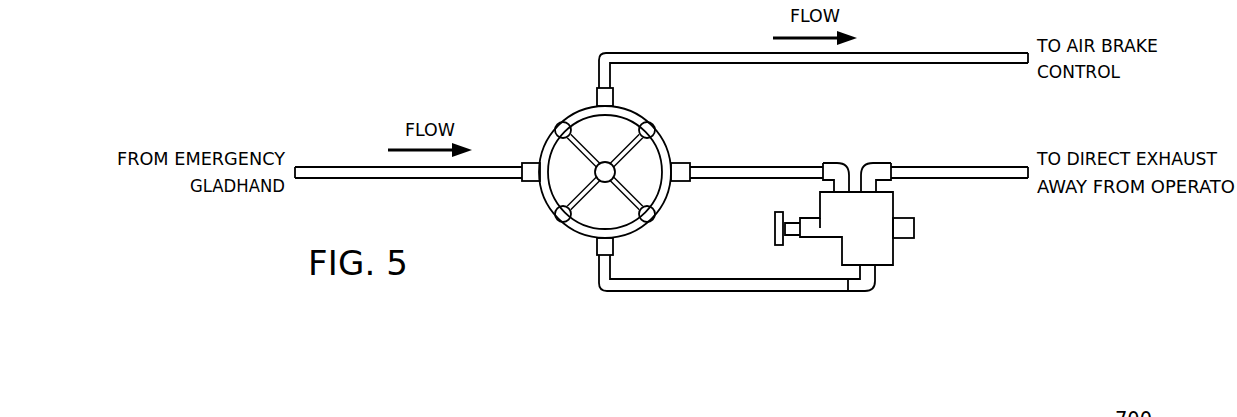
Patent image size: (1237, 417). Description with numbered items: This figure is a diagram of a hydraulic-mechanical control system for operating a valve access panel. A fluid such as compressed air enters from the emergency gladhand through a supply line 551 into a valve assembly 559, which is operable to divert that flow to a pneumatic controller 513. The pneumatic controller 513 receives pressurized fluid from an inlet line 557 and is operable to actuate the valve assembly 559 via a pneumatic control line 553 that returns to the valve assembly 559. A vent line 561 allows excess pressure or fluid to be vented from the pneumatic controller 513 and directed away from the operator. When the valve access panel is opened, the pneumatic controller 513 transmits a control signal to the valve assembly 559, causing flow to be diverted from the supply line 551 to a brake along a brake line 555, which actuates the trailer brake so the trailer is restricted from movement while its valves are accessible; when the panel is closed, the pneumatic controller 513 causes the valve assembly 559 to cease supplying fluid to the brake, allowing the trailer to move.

The pneumatic controller 513 is at (895, 252).
The supply line 551 is at (358, 166).
The pneumatic control line 553 is at (728, 293).
The brake line 555 is at (922, 53).
The inlet line 557 is at (760, 166).
The valve assembly 559 is at (573, 234).
The vent line 561 is at (959, 166).